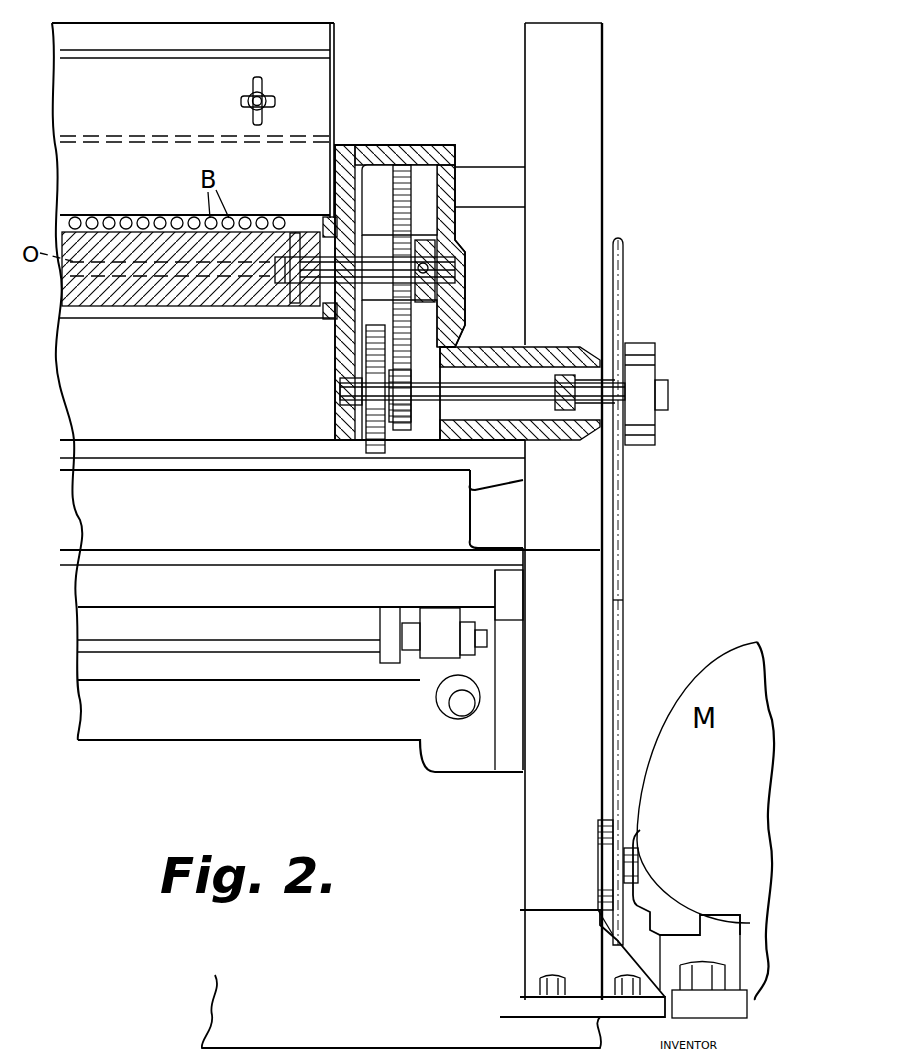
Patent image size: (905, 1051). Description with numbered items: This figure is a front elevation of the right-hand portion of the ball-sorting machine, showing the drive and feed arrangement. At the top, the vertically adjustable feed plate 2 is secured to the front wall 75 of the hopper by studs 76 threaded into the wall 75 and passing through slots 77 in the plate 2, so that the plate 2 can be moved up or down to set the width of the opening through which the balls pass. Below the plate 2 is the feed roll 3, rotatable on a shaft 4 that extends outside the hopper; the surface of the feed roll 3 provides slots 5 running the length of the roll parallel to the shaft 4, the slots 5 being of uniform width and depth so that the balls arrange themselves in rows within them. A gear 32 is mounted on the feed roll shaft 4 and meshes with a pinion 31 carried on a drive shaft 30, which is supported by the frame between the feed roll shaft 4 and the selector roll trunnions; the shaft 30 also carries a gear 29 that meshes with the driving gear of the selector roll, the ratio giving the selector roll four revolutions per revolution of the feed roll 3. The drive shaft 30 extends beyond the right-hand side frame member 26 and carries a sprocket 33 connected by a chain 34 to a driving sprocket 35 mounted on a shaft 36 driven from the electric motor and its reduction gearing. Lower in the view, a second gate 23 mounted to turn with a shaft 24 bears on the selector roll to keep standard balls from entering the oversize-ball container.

The feed plate 2 is at (287, 68).
The feed roll 3 is at (200, 285).
The shaft 4 is at (322, 270).
The slots 5 is at (290, 222).
The second gate 23 is at (290, 628).
The shaft 24 is at (410, 645).
The side frame member 26 is at (568, 304).
The gear 29 is at (375, 455).
The shaft 30 is at (535, 395).
The pinion 31 is at (400, 422).
The gear 32 is at (402, 172).
The sprocket 33 is at (622, 300).
The chain 34 is at (625, 588).
The driving sprocket 35 is at (605, 845).
The shaft 36 is at (633, 840).
The front wall 75 is at (282, 45).
The studs 76 is at (268, 101).
The slots 77 is at (262, 82).